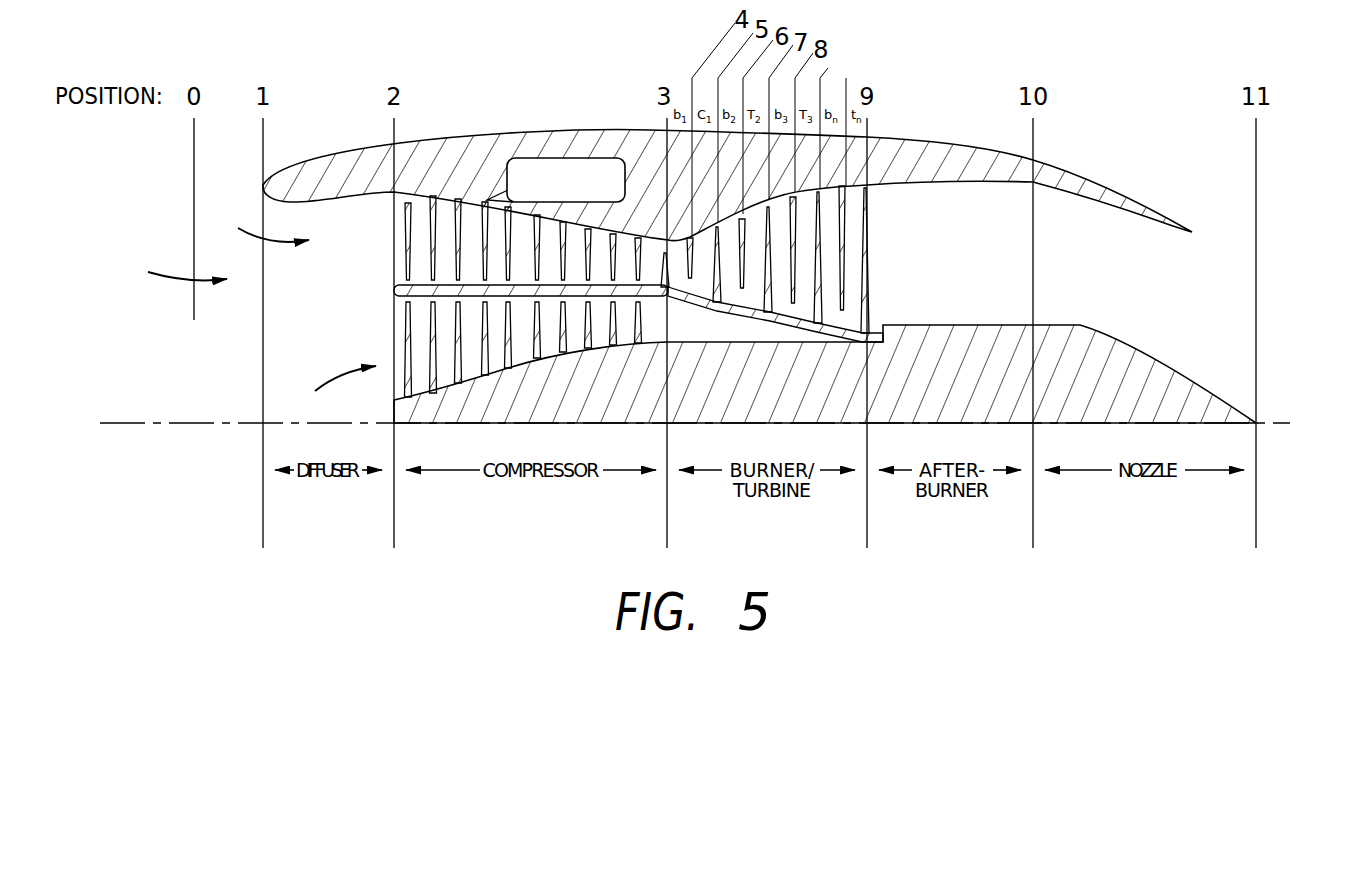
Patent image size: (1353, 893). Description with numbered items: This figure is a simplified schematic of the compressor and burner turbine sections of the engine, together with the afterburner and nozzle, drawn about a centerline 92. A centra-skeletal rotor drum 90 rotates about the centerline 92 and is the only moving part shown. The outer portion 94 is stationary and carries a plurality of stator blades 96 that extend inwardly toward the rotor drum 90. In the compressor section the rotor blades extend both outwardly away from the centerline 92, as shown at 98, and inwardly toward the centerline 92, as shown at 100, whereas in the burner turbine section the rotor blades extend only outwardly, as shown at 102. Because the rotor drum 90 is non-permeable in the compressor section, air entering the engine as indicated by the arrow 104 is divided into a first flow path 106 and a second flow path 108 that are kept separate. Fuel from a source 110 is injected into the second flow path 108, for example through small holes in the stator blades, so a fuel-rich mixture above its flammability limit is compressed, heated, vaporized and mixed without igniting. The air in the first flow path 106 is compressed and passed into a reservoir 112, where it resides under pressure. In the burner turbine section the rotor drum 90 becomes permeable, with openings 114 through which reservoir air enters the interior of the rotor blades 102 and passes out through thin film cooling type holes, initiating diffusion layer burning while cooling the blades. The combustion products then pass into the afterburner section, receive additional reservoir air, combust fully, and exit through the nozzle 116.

The centra-skeletal rotor drum 90 is at (397, 290).
The centerline 92 is at (200, 423).
The outer portion 94 is at (593, 130).
The stator blades 96 is at (435, 217).
The outwardly extending rotor blades 98 is at (406, 240).
The inwardly extending rotor blades 100 is at (407, 340).
The burner turbine rotor blade 102 is at (870, 268).
The arrow indicating entering air 104 is at (165, 266).
The first flow path 106 is at (322, 388).
The second flow path 108 is at (262, 220).
The fuel source 110 is at (528, 168).
The reservoir 112 is at (712, 343).
The openings in the rotor drum 114 is at (866, 330).
The nozzle 116 is at (1222, 319).